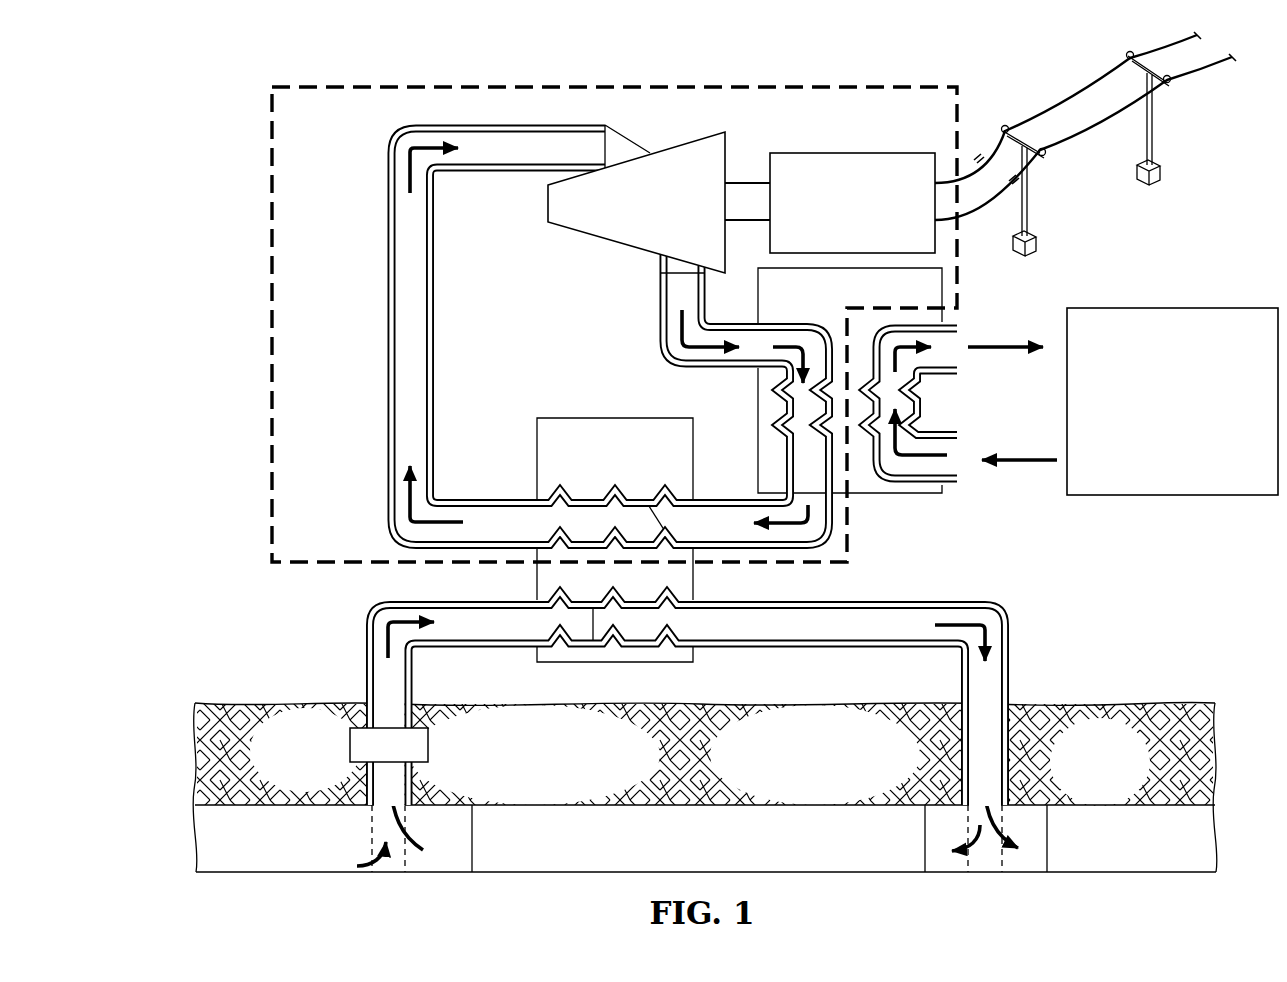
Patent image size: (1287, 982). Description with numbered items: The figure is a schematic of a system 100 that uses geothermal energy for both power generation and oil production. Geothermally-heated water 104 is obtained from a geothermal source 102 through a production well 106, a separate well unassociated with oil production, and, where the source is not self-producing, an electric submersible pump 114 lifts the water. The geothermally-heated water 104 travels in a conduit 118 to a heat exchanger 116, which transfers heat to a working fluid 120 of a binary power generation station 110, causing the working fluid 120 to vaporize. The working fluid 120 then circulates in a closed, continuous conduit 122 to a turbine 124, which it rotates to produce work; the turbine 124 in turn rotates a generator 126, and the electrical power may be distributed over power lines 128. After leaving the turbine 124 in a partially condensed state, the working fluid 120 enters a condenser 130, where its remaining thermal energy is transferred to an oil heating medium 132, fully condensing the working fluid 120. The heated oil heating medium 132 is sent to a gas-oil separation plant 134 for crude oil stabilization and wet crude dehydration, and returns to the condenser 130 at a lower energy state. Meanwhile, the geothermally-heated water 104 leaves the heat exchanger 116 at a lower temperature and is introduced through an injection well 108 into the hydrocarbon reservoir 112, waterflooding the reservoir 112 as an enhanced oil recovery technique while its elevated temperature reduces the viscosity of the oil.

The system 100 is at (467, 60).
The geothermal source 102 is at (195, 843).
The geothermally-heated water 104 is at (420, 872).
The production well 106 is at (365, 655).
The injection well 108 is at (1010, 650).
The binary power generation station 110 is at (265, 269).
The hydrocarbon reservoir 112 is at (1215, 843).
The electric submersible pump 114 is at (350, 745).
The heat exchanger 116 is at (618, 418).
The conduit 118 is at (468, 648).
The working fluid 120 is at (403, 248).
The conduit 122 is at (437, 340).
The turbine 124 is at (600, 240).
The generator 126 is at (853, 153).
The power lines 128 is at (1073, 105).
The condenser 130 is at (947, 400).
The oil heating medium 132 is at (1008, 340).
The gas-oil separation plant 134 is at (1175, 308).